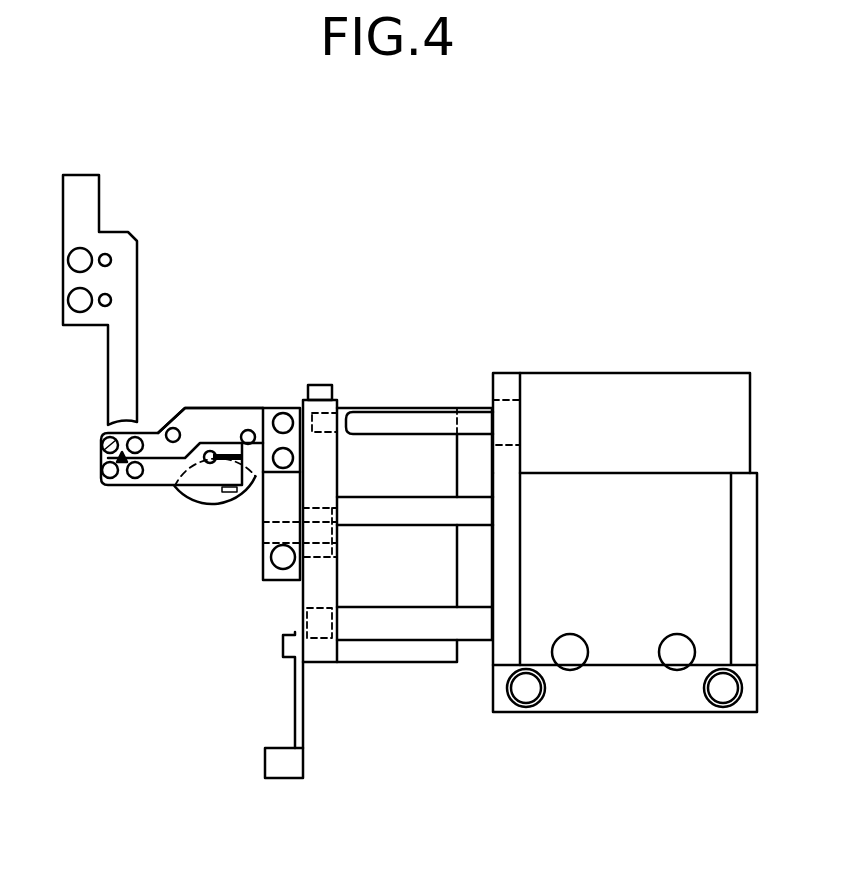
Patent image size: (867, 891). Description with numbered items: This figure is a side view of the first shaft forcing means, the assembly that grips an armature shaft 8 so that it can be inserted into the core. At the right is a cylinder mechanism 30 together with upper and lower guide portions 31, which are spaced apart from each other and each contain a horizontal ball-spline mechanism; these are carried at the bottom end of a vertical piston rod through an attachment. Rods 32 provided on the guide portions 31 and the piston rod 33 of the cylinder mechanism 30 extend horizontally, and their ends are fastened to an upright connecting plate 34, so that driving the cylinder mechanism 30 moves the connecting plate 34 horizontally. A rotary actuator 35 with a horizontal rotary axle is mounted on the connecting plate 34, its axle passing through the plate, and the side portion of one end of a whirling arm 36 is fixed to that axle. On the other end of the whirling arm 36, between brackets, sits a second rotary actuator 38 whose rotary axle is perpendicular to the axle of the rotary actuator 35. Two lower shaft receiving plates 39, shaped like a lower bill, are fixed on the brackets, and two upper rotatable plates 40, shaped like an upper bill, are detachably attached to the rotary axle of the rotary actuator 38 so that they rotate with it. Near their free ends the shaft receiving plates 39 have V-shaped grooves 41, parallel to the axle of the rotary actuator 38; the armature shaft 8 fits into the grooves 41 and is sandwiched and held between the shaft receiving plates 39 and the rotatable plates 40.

The armature shaft 8 is at (122, 463).
The cylinder mechanism 30 is at (602, 388).
The guide portions 31 is at (718, 603).
The rods 32 is at (422, 623).
The piston rod 33 is at (405, 420).
The connecting plate 34 is at (322, 648).
The rotary actuator 35 is at (336, 532).
The whirling arm 36 is at (277, 505).
The rotary actuator 38 is at (212, 497).
The lower shaft receiving plates 39 is at (150, 442).
The upper rotatable plates 40 is at (157, 477).
The grooves 41 is at (102, 442).